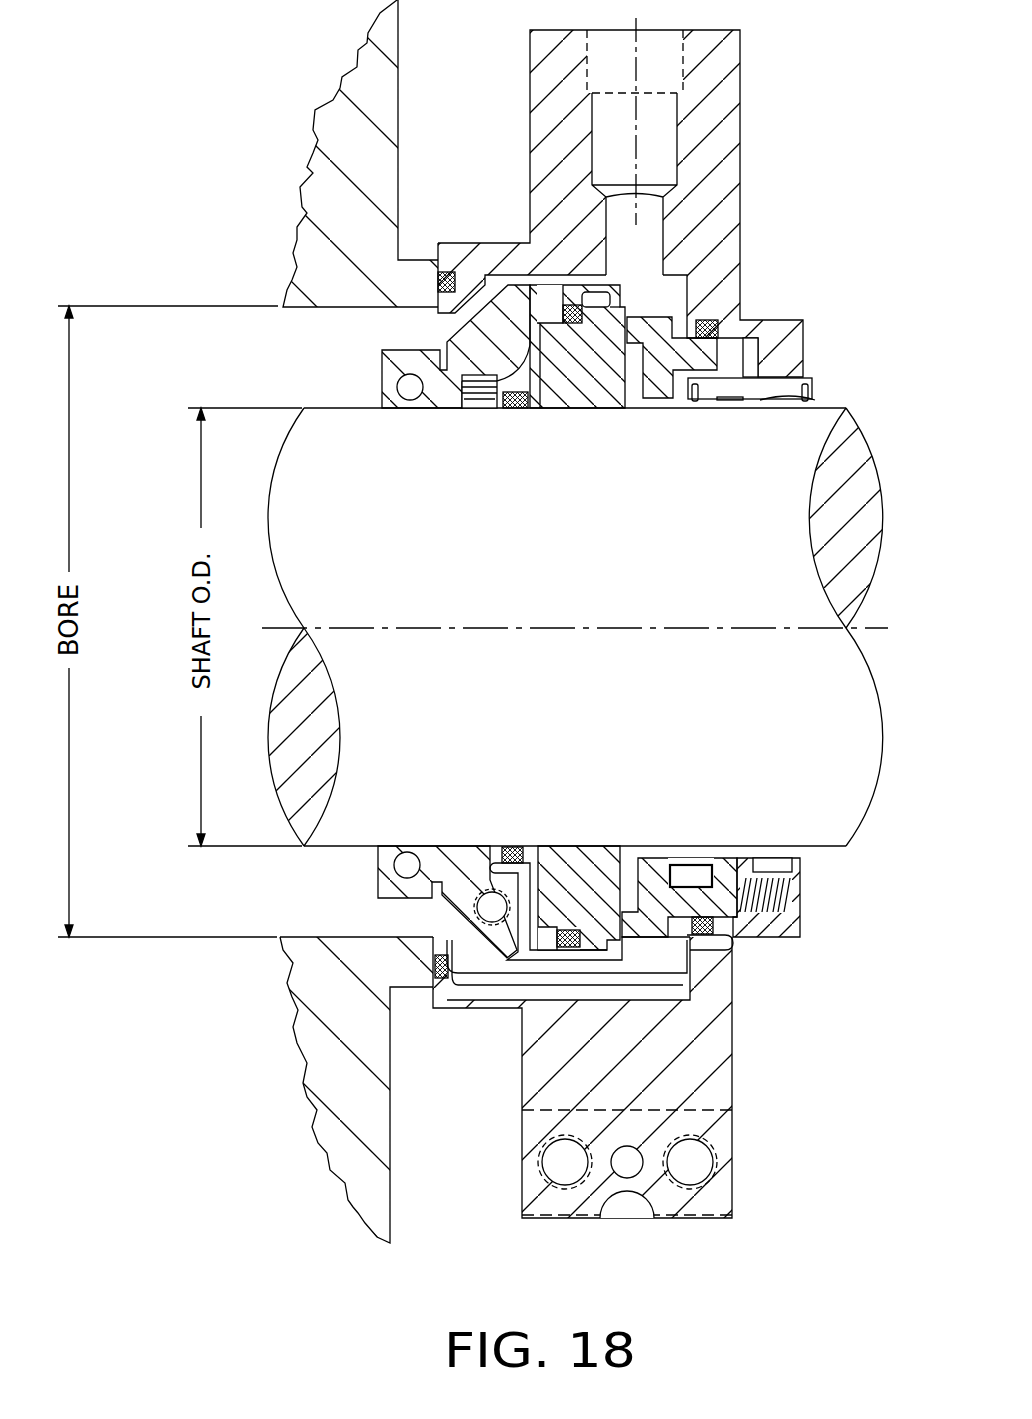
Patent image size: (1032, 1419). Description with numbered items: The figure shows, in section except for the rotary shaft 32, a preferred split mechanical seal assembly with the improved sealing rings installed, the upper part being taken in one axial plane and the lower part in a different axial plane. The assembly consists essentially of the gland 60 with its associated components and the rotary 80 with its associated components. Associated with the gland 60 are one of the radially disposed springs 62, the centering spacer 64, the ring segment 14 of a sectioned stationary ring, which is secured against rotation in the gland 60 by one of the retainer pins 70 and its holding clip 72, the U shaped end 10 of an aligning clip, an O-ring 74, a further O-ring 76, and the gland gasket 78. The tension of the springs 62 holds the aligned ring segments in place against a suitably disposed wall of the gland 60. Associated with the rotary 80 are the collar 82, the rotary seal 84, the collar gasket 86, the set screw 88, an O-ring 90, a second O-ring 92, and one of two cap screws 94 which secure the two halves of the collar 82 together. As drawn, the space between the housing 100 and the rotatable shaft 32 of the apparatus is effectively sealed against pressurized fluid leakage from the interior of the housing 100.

The U shaped end of aligning clip 10 is at (690, 865).
The ring segment 14 is at (655, 372).
The shaft 32 is at (330, 406).
The gland 60 is at (487, 248).
The radially disposed spring 62 is at (770, 876).
The centering spacer 64 is at (790, 405).
The retainer pin 70 is at (785, 382).
The holding clip 72 is at (700, 402).
The O-ring 74 is at (708, 320).
The O-ring 76 is at (446, 270).
The gland gasket 78 is at (502, 1000).
The rotary 80 is at (332, 354).
The collar 82 is at (437, 402).
The rotary seal 84 is at (562, 385).
The collar gasket 86 is at (512, 846).
The set screw 88 is at (478, 396).
The O-ring 90 is at (526, 402).
The O-ring 92 is at (588, 328).
The cap screw 94 is at (490, 891).
The housing 100 is at (337, 185).